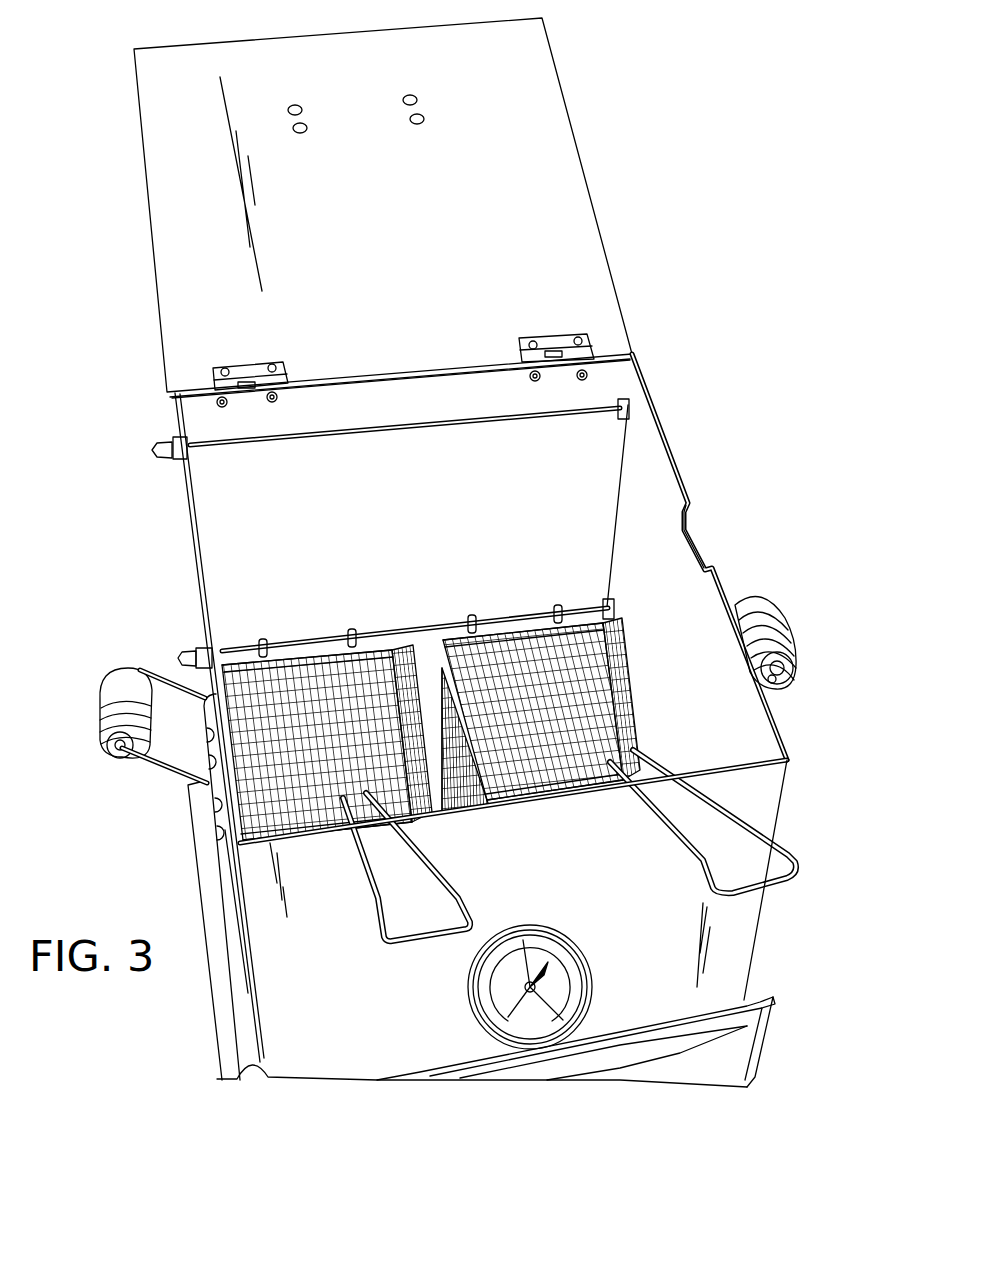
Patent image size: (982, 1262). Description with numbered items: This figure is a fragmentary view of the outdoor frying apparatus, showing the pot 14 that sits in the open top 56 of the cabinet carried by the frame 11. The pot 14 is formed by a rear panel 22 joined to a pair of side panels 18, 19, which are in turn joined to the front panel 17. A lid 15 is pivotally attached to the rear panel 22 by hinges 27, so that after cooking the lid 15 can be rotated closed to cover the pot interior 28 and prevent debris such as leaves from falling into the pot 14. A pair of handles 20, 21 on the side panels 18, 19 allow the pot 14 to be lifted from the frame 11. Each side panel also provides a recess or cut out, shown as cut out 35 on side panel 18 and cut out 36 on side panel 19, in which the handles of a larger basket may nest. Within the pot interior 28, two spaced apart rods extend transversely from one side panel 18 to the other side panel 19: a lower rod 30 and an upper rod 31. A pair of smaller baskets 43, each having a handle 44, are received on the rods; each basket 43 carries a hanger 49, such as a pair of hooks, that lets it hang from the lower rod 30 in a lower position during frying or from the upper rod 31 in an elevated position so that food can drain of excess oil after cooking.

The frame 11 is at (773, 1033).
The pot 14 is at (662, 476).
The lid 15 is at (582, 245).
The front panel 17 is at (338, 999).
The side panel 18 is at (196, 690).
The side panel 19 is at (660, 654).
The handle 20 is at (113, 760).
The handle 21 is at (760, 630).
The rear panel 22 is at (280, 489).
The hinges 27 is at (253, 368).
The pot interior 28 is at (279, 554).
The lower rod 30 is at (413, 632).
The upper rod 31 is at (460, 436).
The recess or cut out 35 is at (192, 577).
The recess or cut out 36 is at (707, 540).
The basket 43 is at (318, 640).
The handle 44 is at (452, 890).
The hanger 49 is at (263, 640).
The open top 56 is at (745, 998).